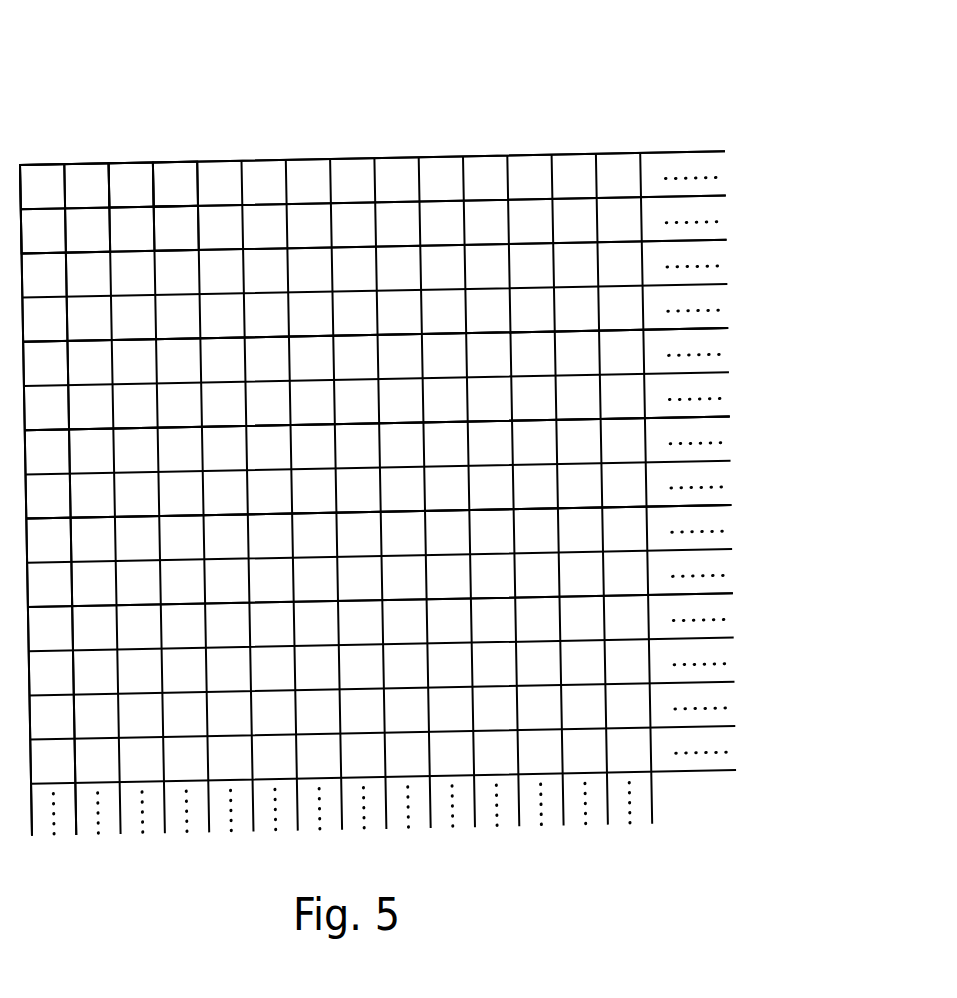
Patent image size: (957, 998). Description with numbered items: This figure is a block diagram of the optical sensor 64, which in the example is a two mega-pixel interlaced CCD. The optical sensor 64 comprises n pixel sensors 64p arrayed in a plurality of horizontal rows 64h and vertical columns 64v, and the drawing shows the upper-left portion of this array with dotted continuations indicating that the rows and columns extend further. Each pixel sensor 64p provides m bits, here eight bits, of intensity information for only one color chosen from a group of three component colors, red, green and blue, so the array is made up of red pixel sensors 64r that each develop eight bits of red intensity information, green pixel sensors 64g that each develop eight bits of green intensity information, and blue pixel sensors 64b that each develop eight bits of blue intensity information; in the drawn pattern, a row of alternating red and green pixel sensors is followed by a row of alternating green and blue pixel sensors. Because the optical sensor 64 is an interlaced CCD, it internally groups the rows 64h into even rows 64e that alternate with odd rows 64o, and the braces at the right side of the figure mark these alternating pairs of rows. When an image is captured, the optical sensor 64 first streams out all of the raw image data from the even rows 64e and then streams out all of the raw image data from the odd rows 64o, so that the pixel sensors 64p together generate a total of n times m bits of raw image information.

The optical sensor 64 is at (548, 118).
The pixel sensor 64p is at (52, 167).
The red pixel sensor 64r is at (143, 165).
The green pixel sensor 64g is at (190, 166).
The blue pixel sensor 64b is at (192, 212).
The horizontal row 64h is at (722, 172).
The odd row 64o is at (741, 239).
The even row 64e is at (741, 328).
The vertical column 64v is at (63, 852).